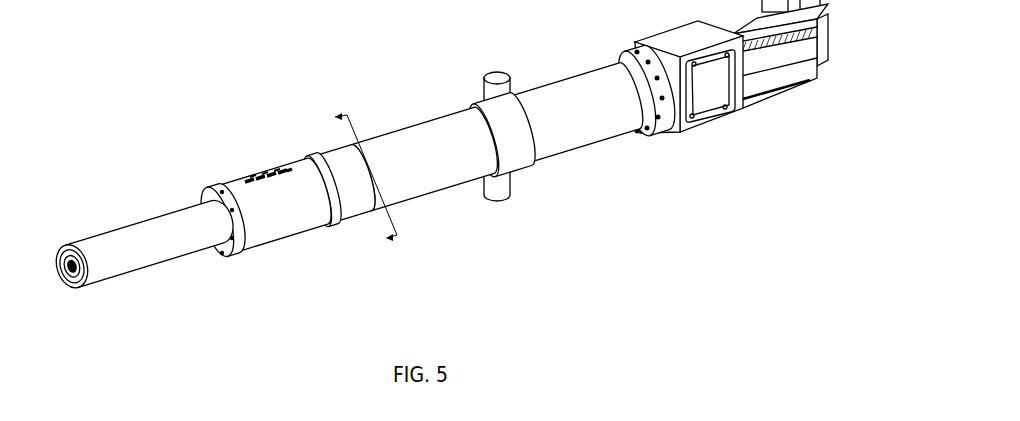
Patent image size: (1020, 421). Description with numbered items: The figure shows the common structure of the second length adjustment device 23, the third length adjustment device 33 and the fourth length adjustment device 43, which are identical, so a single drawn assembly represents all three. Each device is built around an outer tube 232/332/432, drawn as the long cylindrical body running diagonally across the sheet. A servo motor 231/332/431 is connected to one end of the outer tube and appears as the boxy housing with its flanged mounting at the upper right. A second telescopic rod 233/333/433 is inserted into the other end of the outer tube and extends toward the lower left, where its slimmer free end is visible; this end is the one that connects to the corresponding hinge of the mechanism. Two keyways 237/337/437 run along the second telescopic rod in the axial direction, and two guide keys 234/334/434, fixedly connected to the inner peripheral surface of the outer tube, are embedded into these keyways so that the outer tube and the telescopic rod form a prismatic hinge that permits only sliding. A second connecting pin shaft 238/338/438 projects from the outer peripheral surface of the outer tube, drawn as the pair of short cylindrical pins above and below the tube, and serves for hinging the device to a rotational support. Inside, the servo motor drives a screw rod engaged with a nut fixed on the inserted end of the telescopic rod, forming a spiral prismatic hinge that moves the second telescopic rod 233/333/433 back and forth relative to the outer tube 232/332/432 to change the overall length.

The second length adjustment device 23 is at (426, 147).
The third length adjustment device 33 is at (426, 147).
The fourth length adjustment device 43 is at (572, 291).
The servo motor 231 is at (719, 104).
The outer tube 332 is at (719, 104).
The servo motor 431 is at (760, 75).
The outer tube 232 is at (433, 128).
The outer tube 432 is at (438, 138).
The second telescopic rod 233 is at (149, 157).
The second telescopic rod 333 is at (149, 157).
The second telescopic rod 433 is at (203, 225).
The guide key 234 is at (279, 118).
The guide key 334 is at (279, 118).
The guide key 434 is at (268, 172).
The keyway 237 is at (131, 212).
The keyway 337 is at (131, 212).
The keyway 437 is at (125, 228).
The second connecting pin shaft 238 is at (560, 100).
The second connecting pin shaft 338 is at (560, 100).
The second connecting pin shaft 438 is at (504, 84).